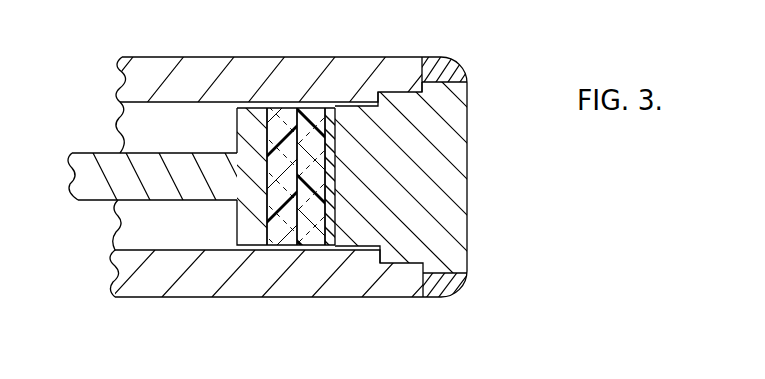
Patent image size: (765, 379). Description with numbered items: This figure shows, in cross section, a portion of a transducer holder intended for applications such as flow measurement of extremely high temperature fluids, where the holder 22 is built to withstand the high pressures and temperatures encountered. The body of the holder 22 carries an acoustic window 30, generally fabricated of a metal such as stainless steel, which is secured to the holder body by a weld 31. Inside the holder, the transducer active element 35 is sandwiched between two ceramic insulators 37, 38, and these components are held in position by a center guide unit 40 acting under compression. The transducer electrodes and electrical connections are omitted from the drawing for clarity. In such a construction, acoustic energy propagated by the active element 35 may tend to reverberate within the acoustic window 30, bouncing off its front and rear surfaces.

The holder 22 is at (273, 57).
The weld 31 is at (457, 63).
The acoustic window 30 is at (468, 160).
The center guide unit 40 is at (84, 153).
The ceramic insulator 38 is at (283, 245).
The transducer active element 35 is at (305, 245).
The ceramic insulator 37 is at (334, 245).